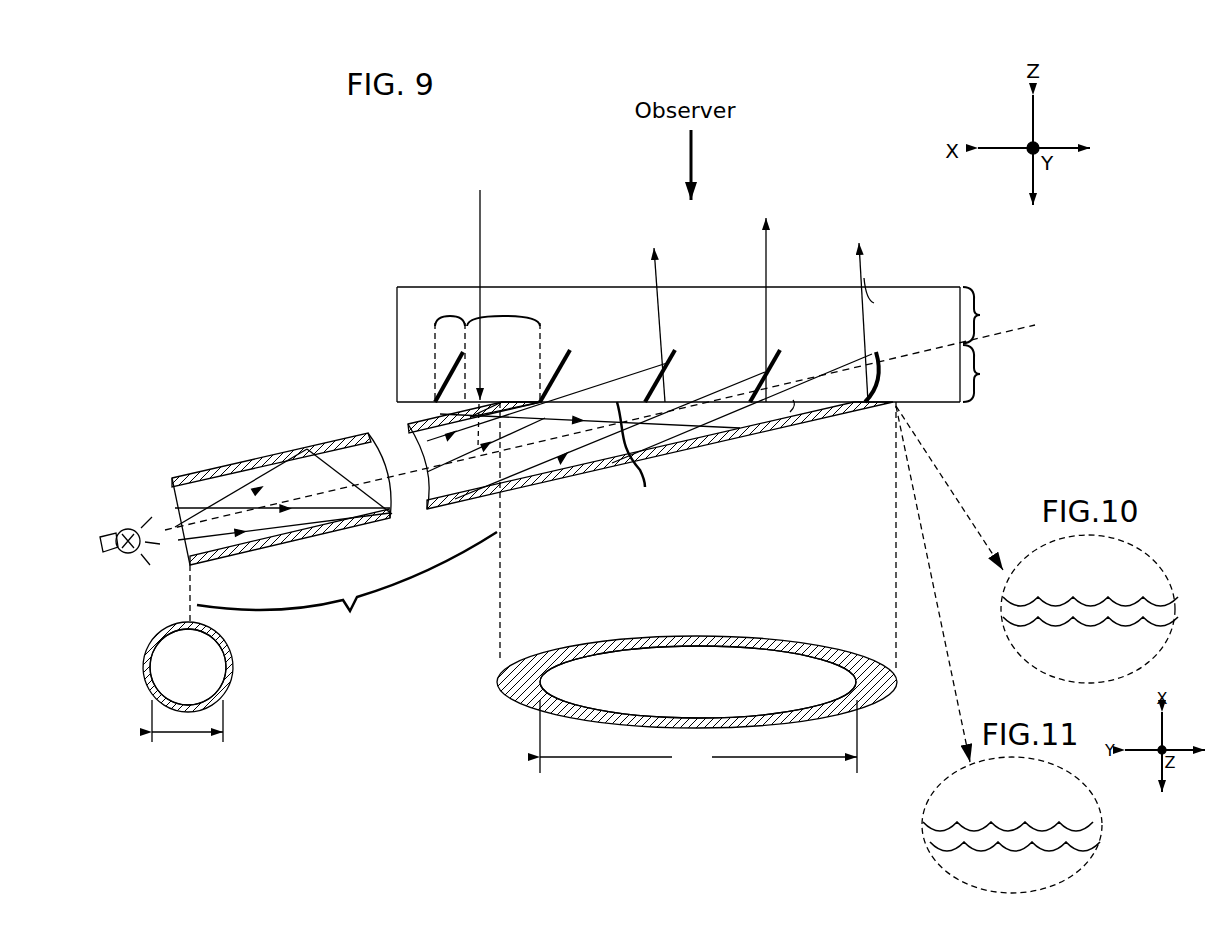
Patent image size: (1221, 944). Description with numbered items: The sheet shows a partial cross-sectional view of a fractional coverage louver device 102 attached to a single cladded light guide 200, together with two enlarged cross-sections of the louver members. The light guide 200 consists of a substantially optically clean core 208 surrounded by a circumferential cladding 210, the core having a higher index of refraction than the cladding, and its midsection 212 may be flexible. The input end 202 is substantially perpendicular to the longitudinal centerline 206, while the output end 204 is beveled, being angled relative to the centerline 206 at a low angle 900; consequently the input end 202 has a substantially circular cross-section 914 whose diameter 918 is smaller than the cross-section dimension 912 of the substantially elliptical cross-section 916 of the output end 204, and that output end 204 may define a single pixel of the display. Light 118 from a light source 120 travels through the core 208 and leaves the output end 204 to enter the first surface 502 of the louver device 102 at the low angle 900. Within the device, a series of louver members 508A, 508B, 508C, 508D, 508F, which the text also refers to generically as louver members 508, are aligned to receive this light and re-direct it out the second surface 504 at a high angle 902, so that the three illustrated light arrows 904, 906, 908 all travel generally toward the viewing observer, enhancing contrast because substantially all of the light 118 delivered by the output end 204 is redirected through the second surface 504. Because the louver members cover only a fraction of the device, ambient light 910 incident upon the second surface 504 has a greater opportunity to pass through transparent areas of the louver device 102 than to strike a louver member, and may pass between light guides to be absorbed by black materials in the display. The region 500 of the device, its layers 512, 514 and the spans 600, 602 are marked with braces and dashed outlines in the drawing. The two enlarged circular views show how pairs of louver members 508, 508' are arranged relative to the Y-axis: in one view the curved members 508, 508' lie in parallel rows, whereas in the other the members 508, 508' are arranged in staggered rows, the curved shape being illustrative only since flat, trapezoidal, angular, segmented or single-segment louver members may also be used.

In FIG. 9, the louver device 102 is at (390, 281).
In FIG. 9, the light 118 is at (152, 556).
In FIG. 9, the light source 120 is at (118, 532).
In FIG. 9, the light guide 200 is at (305, 446).
In FIG. 9, the input end 202 is at (170, 488).
In FIG. 9, the output end 204 is at (640, 454).
In FIG. 9, the longitudinal centerline 206 is at (270, 580).
In FIG. 9, the core 208 is at (292, 484).
In FIG. 9, the cladding 210 is at (180, 480).
In FIG. 9, the midsection 212 is at (347, 589).
In FIG. 9, the light extraction region 500 is at (416, 357).
In FIG. 9, the first surface 502 is at (937, 404).
In FIG. 9, the second surface 504 is at (450, 287).
In FIG. 10, the louver member 508 is at (1101, 575).
In FIG. 11, the louver member 508 is at (1023, 799).
In FIG. 10, the louver member 508' is at (1101, 648).
In FIG. 11, the louver member 508' is at (1017, 872).
In FIG. 9, the louver member 508A is at (434, 384).
In FIG. 9, the louver member 508B is at (568, 367).
In FIG. 9, the louver member 508C is at (677, 367).
In FIG. 9, the louver member 508D is at (782, 367).
In FIG. 9, the louver member 508F is at (889, 367).
In FIG. 9, the lower layer 512 is at (987, 373).
In FIG. 9, the upper layer 514 is at (987, 315).
In FIG. 9, the first region 600 is at (448, 347).
In FIG. 9, the second region 602 is at (503, 347).
In FIG. 9, the low angle 900 is at (790, 414).
In FIG. 9, the high angle 902 is at (871, 280).
In FIG. 9, the light arrow 904 is at (653, 312).
In FIG. 9, the light arrow 906 is at (765, 298).
In FIG. 9, the light arrow 908 is at (861, 312).
In FIG. 9, the ambient light 910 is at (479, 306).
In FIG. 9, the cross-section dimension 912 is at (698, 736).
In FIG. 9, the circular cross-section 914 is at (228, 689).
In FIG. 9, the elliptical cross-section 916 is at (815, 642).
In FIG. 9, the diameter 918 is at (187, 727).